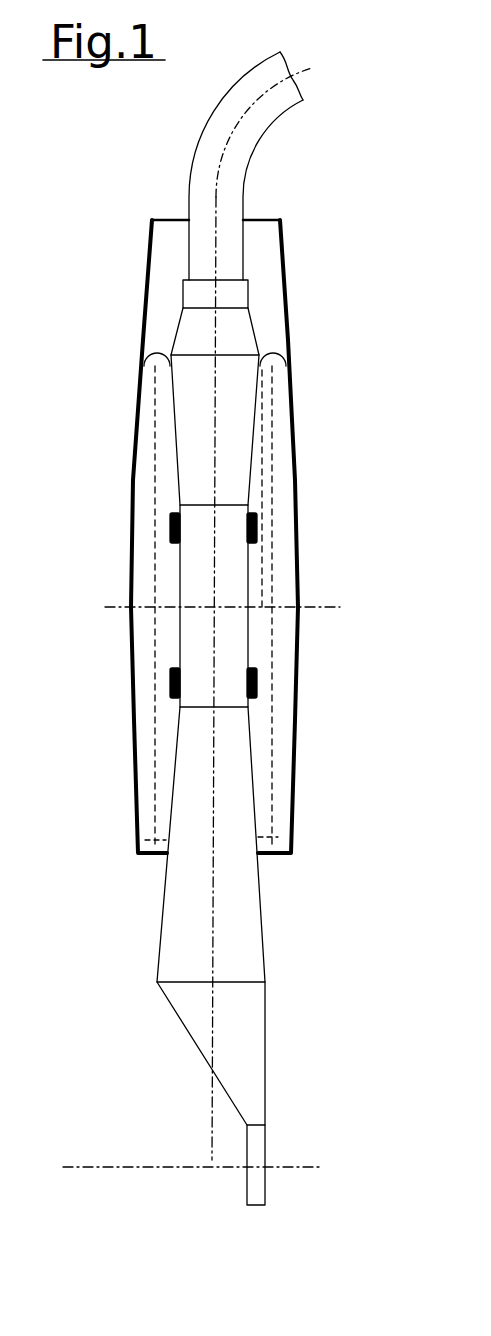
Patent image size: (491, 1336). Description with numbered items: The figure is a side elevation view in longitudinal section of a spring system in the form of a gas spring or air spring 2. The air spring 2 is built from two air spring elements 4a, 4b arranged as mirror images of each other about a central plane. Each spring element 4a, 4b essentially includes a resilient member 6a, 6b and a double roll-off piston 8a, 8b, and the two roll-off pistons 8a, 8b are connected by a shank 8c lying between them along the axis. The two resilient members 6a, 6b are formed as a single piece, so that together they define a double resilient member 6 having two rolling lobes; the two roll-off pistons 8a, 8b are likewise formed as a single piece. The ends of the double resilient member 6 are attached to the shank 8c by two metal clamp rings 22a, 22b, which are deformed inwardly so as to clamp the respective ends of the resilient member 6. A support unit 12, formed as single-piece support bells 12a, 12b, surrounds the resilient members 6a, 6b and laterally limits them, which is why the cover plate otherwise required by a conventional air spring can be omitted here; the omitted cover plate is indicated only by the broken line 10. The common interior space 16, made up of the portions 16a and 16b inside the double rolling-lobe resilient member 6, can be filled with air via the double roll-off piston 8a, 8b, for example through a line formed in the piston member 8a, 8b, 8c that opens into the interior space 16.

The air spring 2 is at (298, 243).
The air spring element 4a is at (297, 460).
The air spring element 4b is at (300, 688).
The double resilient member 6 is at (218, 536).
The resilient member 6a is at (290, 366).
The resilient member 6b is at (284, 788).
The roll-off piston 8a is at (232, 413).
The roll-off piston 8b is at (243, 865).
The shank 8c is at (233, 633).
The broken line 10 is at (307, 606).
The support unit 12 is at (95, 536).
The support bell 12a is at (132, 468).
The support bell 12b is at (132, 765).
The common interior space 16 is at (95, 606).
The interior space 16a is at (150, 442).
The interior space 16b is at (155, 787).
The metal clamp ring 22a is at (257, 523).
The metal clamp ring 22b is at (252, 690).